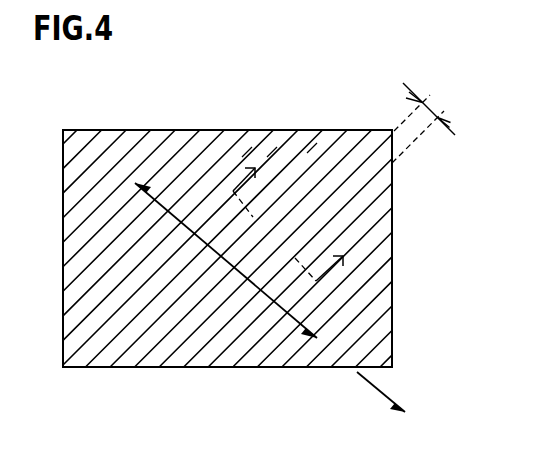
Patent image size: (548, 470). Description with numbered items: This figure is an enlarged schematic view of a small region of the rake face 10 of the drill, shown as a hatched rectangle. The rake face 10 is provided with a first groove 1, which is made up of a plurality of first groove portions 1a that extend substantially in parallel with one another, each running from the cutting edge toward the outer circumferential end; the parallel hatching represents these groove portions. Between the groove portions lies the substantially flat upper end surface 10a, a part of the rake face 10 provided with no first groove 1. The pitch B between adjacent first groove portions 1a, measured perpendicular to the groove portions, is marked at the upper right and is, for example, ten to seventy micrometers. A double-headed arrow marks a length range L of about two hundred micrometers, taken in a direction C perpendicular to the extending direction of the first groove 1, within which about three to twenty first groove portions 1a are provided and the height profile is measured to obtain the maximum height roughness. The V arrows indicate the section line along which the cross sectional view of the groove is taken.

The rake face 10 is at (333, 50).
The first groove 1 is at (290, 85).
The first groove portions 1a is at (267, 157).
The upper end surface 10a is at (307, 153).
The length range L is at (233, 237).
The V-V line V is at (283, 233).
The pitch B is at (423, 123).
The direction C is at (377, 388).